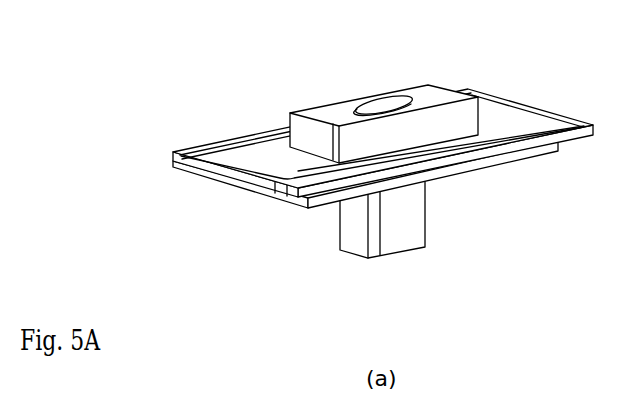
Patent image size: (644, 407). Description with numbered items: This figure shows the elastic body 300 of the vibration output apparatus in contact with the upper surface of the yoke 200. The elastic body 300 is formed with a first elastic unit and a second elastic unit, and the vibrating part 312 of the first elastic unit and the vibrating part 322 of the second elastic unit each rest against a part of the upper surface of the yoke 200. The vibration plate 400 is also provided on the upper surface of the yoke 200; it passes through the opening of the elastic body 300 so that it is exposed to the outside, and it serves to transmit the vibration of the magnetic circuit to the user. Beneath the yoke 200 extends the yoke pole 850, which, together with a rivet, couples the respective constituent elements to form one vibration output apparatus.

The yoke 200 is at (512, 163).
The elastic body 300 is at (391, 116).
The vibrating part of the first elastic unit 312 is at (258, 150).
The vibrating part of the second elastic unit 322 is at (493, 117).
The vibration plate 400 is at (325, 108).
The yoke pole 850 is at (353, 249).